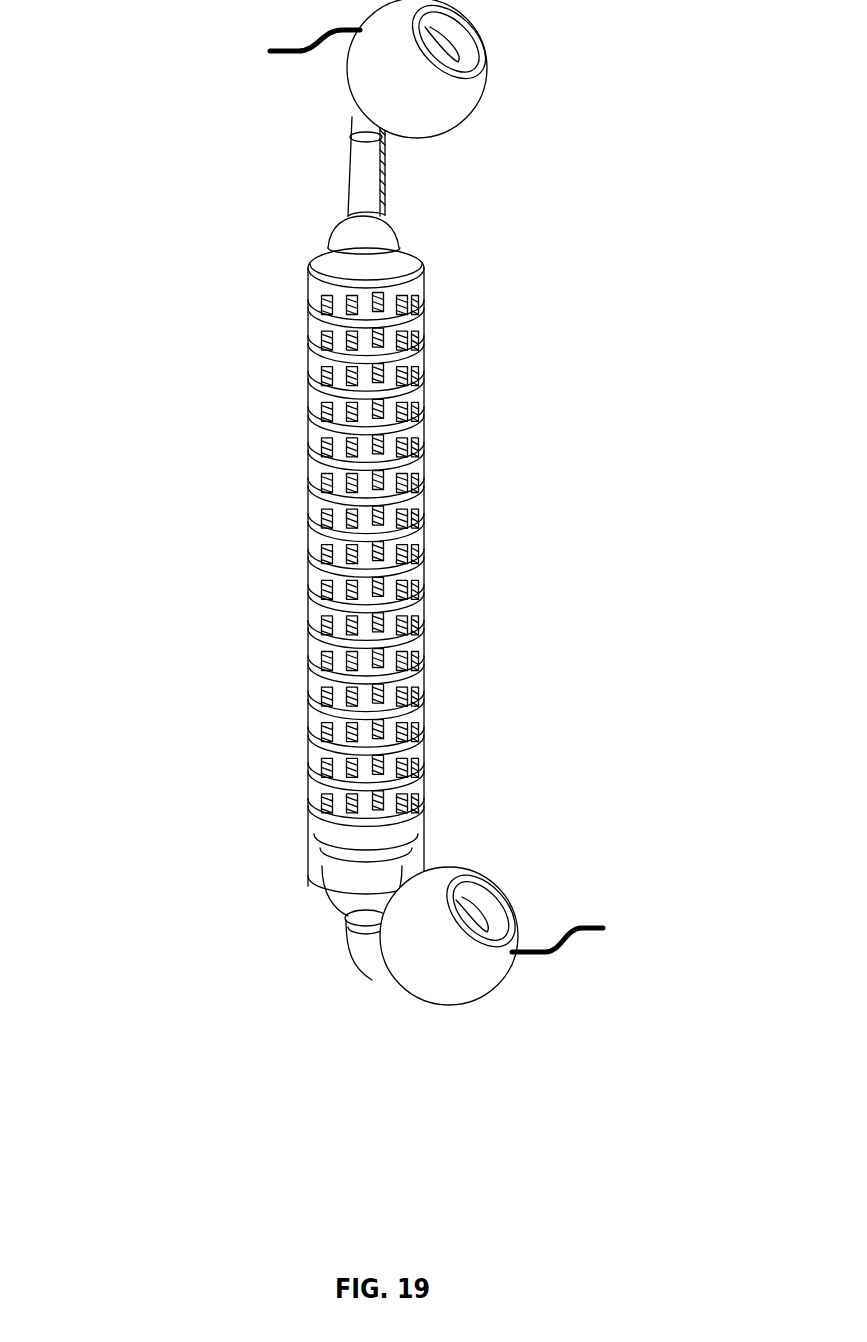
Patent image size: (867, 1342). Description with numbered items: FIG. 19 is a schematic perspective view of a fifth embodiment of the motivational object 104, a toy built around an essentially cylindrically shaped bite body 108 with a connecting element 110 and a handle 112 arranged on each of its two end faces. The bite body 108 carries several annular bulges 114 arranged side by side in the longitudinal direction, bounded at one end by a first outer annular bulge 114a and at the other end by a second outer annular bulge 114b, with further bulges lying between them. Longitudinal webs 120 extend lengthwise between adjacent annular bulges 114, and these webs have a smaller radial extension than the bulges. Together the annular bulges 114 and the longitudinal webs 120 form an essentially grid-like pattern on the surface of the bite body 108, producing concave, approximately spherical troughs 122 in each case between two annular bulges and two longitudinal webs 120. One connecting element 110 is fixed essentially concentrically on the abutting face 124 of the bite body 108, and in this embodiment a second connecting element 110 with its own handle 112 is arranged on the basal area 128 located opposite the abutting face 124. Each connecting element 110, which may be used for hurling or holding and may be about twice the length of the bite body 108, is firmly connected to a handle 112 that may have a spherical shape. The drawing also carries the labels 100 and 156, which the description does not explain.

The implant assembly 100 is at (168, 306).
The motivational object 104 is at (176, 273).
The bite body 108 is at (308, 541).
The connecting element 110 is at (378, 193).
The handle 112 is at (453, 92).
The annular bulges 114 is at (420, 728).
The first outer annular bulge 114a is at (428, 282).
The second outer annular bulge 114b is at (397, 833).
The longitudinal webs 120 is at (430, 345).
The troughs 122 is at (410, 760).
The abutting face 124 is at (407, 258).
The basal area 128 is at (335, 897).
The tether 156 is at (441, 489).